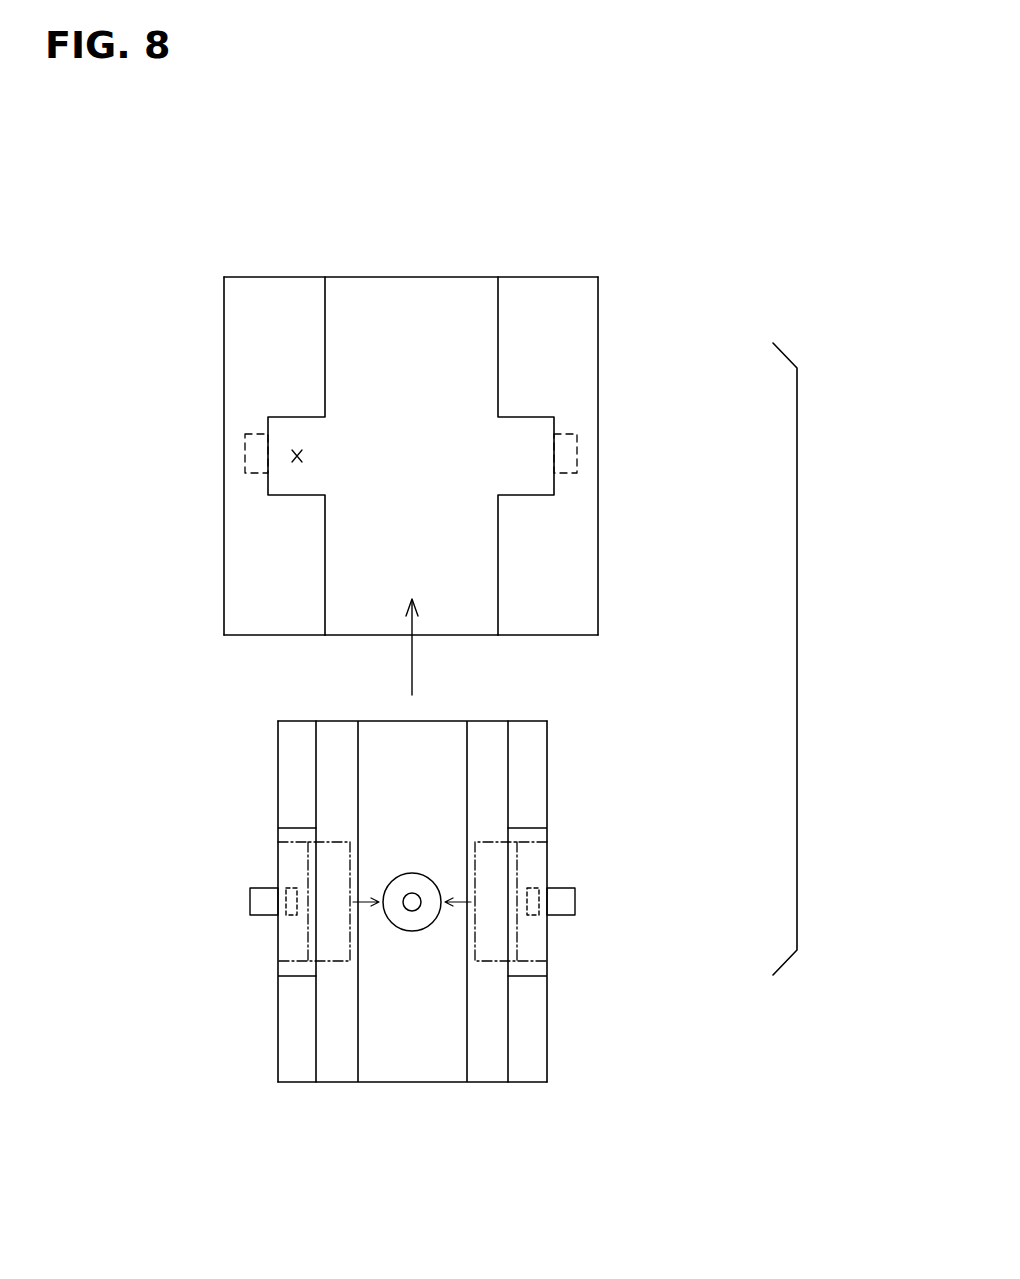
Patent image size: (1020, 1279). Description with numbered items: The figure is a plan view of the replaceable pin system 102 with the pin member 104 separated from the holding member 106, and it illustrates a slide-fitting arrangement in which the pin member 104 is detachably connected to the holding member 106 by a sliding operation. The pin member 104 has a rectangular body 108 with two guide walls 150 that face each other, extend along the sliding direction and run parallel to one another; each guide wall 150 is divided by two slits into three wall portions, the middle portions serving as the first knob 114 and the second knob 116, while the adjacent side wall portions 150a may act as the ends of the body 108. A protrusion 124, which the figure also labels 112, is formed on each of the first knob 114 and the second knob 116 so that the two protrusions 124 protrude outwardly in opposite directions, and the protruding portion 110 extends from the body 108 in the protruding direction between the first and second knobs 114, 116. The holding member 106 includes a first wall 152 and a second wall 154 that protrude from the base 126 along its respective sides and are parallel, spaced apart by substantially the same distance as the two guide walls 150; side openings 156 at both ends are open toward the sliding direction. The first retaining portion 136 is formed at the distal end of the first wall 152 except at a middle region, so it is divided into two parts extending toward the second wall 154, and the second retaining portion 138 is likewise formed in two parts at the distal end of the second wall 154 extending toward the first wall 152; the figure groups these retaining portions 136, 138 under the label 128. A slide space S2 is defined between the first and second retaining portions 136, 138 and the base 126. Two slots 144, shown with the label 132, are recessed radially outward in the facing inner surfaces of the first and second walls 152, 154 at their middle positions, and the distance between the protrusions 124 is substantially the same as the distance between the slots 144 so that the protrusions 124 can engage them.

The replaceable pin system 102 is at (686, 193).
The pin member 104 is at (415, 885).
The holding member 106 is at (415, 437).
The body 108 is at (447, 1018).
The protruding portion 110 is at (424, 874).
The clamping mechanism 112 is at (415, 877).
The first knob 114 is at (290, 943).
The second knob 116 is at (537, 945).
The protrusion 124 is at (292, 888).
The base 126 is at (425, 290).
The side punch 128 is at (430, 424).
The pressing portion 132 is at (415, 445).
The first retaining portion 136 is at (287, 348).
The second retaining portion 138 is at (517, 335).
The slot 144 is at (245, 440).
The guide wall 150 is at (280, 1005).
The side wall portion 150a is at (290, 783).
The first wall 152 is at (224, 388).
The second wall 154 is at (599, 388).
The side opening 156 is at (326, 277).
The slide space S2 is at (296, 460).